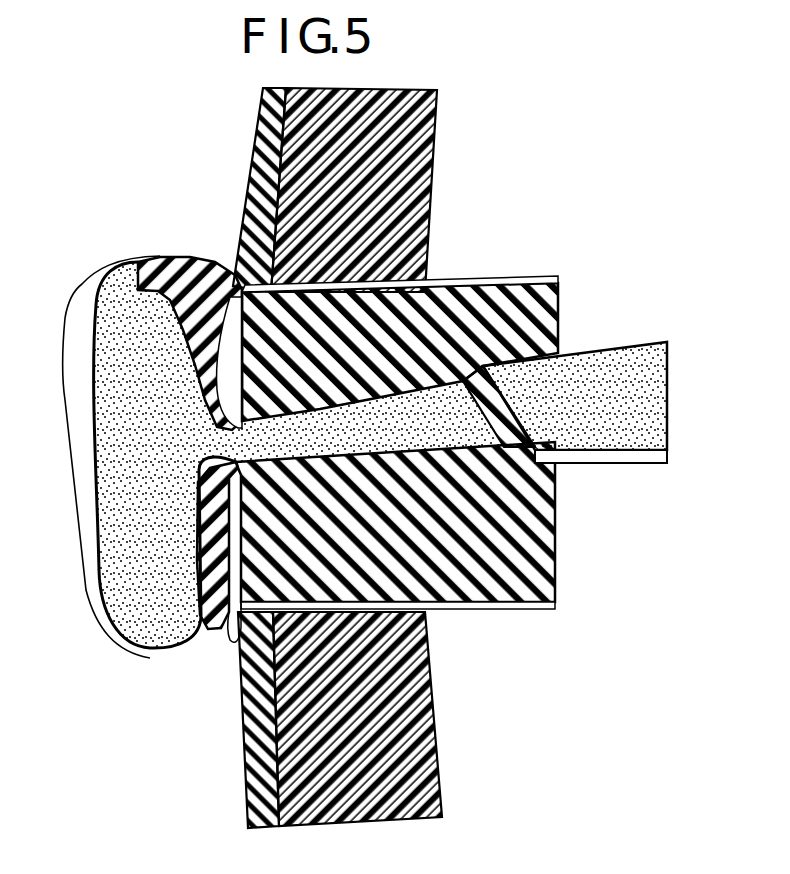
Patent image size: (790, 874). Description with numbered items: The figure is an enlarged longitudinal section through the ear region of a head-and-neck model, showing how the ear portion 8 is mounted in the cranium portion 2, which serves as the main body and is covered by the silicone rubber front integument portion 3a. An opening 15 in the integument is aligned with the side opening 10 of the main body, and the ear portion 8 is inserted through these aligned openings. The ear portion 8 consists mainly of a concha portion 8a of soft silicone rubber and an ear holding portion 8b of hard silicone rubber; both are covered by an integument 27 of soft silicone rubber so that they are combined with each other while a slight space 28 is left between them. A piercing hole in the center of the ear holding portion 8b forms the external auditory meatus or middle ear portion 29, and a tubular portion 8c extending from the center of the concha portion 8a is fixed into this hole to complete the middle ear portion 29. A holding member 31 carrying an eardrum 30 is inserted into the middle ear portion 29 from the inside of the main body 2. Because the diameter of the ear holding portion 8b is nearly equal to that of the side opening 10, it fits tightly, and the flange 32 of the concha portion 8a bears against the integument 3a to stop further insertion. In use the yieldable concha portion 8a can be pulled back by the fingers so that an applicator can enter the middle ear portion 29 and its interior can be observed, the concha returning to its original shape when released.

The cranium portion 2 is at (393, 133).
The front integument portion 3a is at (266, 153).
The ear portion 8 is at (102, 644).
The concha portion 8a is at (153, 630).
The ear holding portion 8b is at (532, 513).
The tubular portion 8c is at (397, 377).
The side opening 10 is at (427, 254).
The opening 15 is at (242, 282).
The integument 27 is at (492, 606).
The slight space 28 is at (210, 630).
The middle ear portion 29 is at (557, 459).
The eardrum 30 is at (558, 353).
The holding member 31 is at (602, 368).
The flange 32 is at (226, 290).